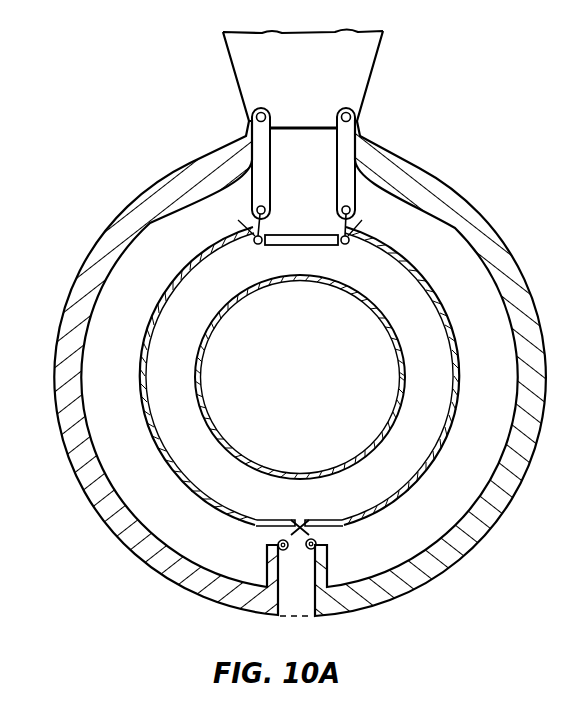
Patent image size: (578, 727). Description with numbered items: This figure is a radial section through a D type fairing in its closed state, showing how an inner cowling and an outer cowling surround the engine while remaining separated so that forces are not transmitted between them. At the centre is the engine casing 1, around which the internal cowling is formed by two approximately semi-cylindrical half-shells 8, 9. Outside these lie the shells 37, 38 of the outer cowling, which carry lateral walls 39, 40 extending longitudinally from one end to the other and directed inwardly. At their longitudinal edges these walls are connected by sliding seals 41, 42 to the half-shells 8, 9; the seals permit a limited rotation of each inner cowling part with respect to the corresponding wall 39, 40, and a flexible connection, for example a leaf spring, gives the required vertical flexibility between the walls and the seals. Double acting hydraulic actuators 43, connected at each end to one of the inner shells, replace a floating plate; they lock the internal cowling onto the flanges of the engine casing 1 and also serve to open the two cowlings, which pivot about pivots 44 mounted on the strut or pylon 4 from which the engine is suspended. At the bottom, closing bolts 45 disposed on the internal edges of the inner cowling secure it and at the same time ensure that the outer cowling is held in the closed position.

The engine casing 1 is at (394, 348).
The strut or pylon 4 is at (311, 85).
The half-shell 8 is at (139, 361).
The half-shell 9 is at (455, 331).
The shell of the outer cowling 37 is at (162, 178).
The shell of the outer cowling 38 is at (477, 221).
The lateral wall 39 is at (346, 166).
The lateral wall 40 is at (328, 573).
The sliding seal 41 is at (254, 212).
The sliding seal 42 is at (276, 547).
The double acting hydraulic actuators 43 is at (323, 246).
The pivots 44 is at (252, 118).
The closing bolts 45 is at (306, 522).